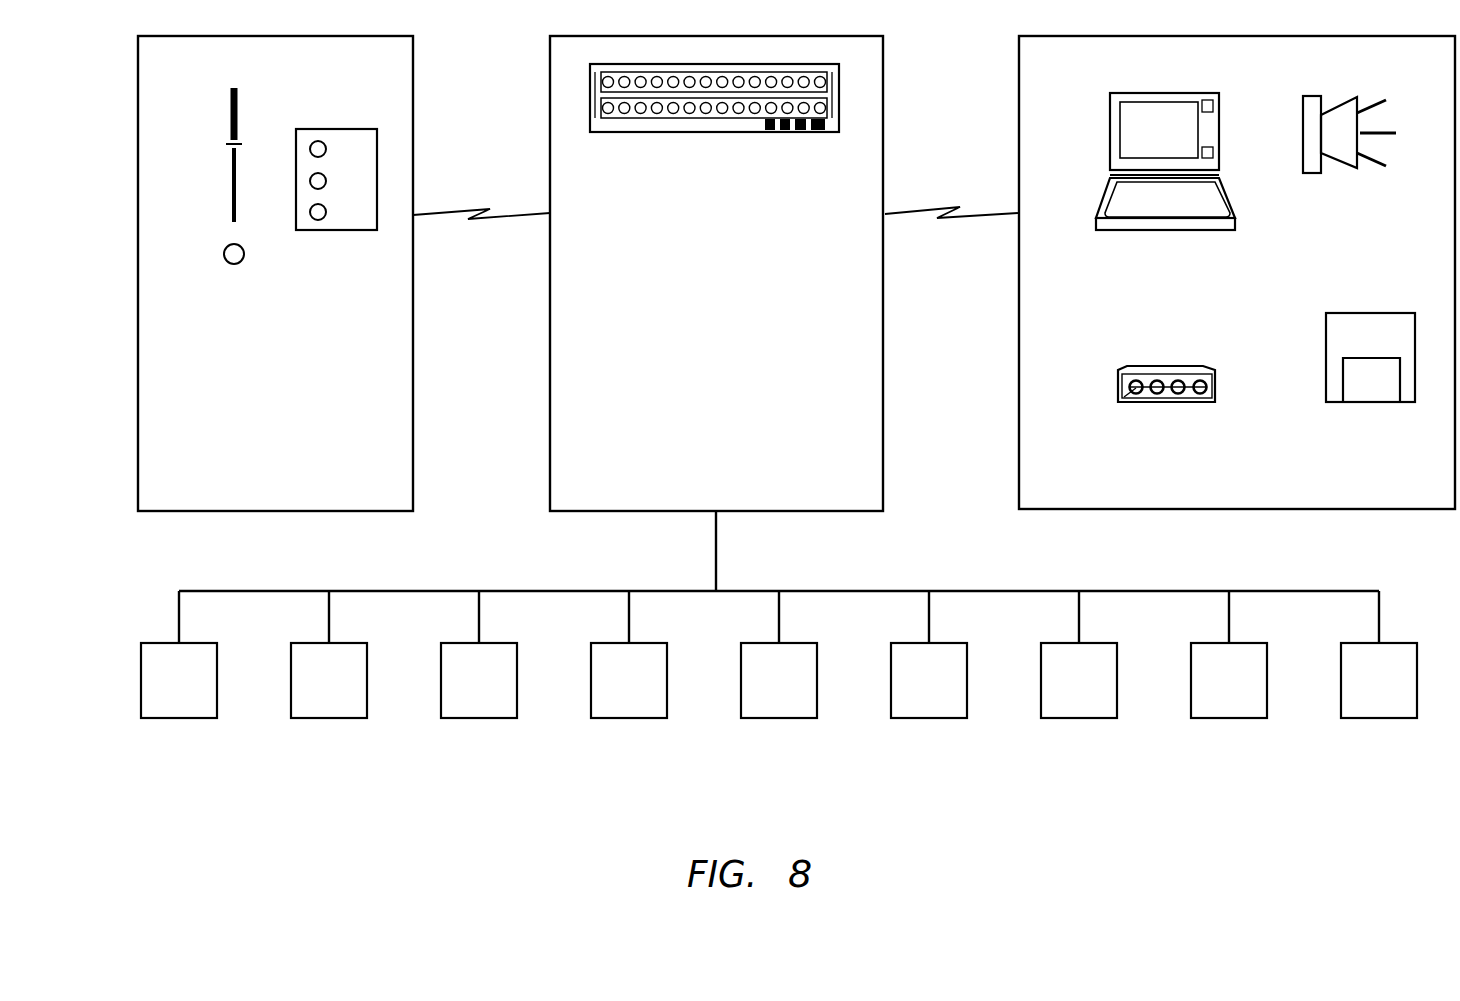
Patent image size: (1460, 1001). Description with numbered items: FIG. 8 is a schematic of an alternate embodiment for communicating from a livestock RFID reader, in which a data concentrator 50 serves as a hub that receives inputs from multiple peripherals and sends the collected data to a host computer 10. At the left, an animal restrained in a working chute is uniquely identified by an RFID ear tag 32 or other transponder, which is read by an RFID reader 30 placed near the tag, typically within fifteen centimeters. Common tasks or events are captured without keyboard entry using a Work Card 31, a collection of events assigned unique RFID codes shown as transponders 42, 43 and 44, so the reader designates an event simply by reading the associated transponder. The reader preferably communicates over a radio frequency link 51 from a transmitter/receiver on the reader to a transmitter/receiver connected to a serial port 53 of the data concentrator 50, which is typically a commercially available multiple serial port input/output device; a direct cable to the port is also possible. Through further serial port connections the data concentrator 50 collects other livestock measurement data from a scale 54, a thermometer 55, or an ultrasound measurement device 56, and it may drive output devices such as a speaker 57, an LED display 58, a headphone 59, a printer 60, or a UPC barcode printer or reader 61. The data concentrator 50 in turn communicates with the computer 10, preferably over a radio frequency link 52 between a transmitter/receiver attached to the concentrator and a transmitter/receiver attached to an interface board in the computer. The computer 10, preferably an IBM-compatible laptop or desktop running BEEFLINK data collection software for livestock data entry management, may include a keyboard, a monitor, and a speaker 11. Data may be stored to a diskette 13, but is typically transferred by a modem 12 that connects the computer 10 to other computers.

The host computer 10 is at (1177, 232).
The speaker 11 is at (1333, 163).
The modem 12 is at (1155, 404).
The diskette 13 is at (1367, 404).
The RFID reader 30 is at (230, 130).
The Work Card 31 is at (320, 129).
The RFID ear tag 32 is at (230, 264).
The transponder 42 is at (318, 149).
The transponder 43 is at (318, 181).
The transponder 44 is at (318, 212).
The data concentrator 50 is at (715, 133).
The radio frequency link 51 is at (464, 212).
The radio frequency link 52 is at (925, 212).
The serial port 53 is at (181, 676).
The scale 54 is at (329, 666).
The thermometer 55 is at (483, 666).
The ultrasound measurement device 56 is at (632, 666).
The speaker 57 is at (781, 666).
The LED display 58 is at (929, 676).
The headphone 59 is at (1083, 666).
The printer 60 is at (1229, 666).
The UPC Barcode printer or reader 61 is at (1379, 676).